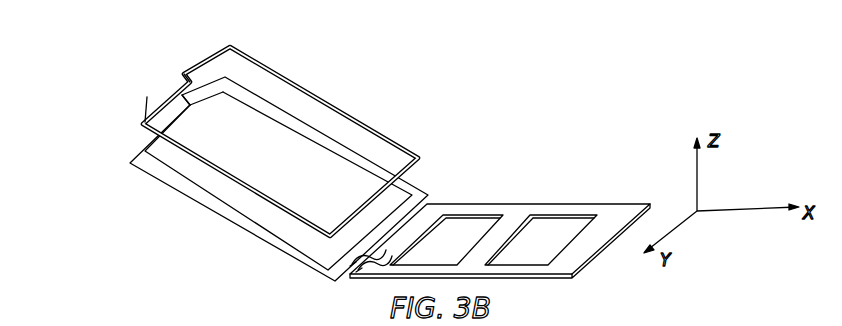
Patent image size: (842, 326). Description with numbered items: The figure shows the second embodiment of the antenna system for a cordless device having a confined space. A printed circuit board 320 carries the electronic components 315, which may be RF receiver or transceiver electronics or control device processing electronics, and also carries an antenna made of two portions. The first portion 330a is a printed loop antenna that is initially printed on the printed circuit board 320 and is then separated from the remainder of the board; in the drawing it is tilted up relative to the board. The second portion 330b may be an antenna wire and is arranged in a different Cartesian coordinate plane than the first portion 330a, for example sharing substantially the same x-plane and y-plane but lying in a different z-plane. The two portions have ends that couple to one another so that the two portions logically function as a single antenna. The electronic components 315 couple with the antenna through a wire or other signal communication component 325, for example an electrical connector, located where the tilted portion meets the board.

The electronic components 315 is at (494, 213).
The printed circuit board 320 is at (637, 281).
The signal communication component 325 is at (357, 252).
The first portion of the antenna 330a is at (413, 187).
The second portion of the antenna 330b is at (273, 68).